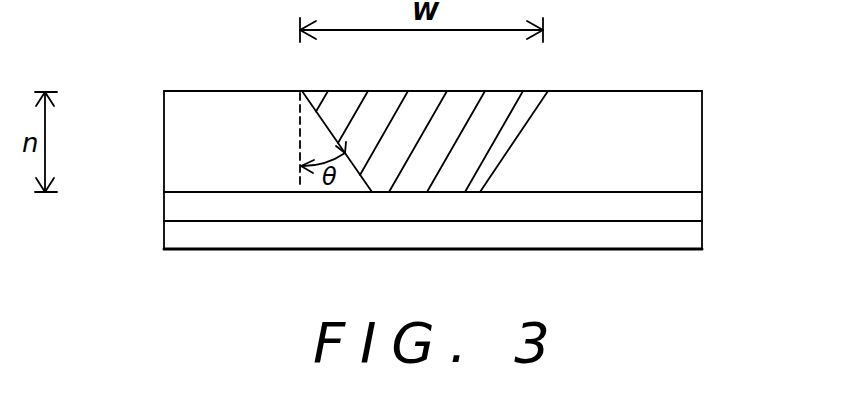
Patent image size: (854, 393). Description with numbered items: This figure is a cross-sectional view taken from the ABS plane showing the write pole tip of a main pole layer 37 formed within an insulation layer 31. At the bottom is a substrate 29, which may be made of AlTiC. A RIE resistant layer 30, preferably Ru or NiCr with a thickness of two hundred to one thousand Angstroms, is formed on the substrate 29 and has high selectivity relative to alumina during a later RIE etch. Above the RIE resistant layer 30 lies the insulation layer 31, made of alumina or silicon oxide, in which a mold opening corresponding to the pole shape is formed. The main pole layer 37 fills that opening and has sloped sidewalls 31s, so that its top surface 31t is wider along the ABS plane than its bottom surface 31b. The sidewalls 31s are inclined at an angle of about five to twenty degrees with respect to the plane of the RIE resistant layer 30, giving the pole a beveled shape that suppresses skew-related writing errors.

The substrate 29 is at (190, 233).
The RIE resistant layer 30 is at (682, 202).
The insulation layer 31 is at (186, 178).
The top surface 31t is at (302, 92).
The bottom surface 31b is at (372, 192).
The sloped sidewalls 31s is at (511, 147).
The main pole layer 37 is at (416, 158).